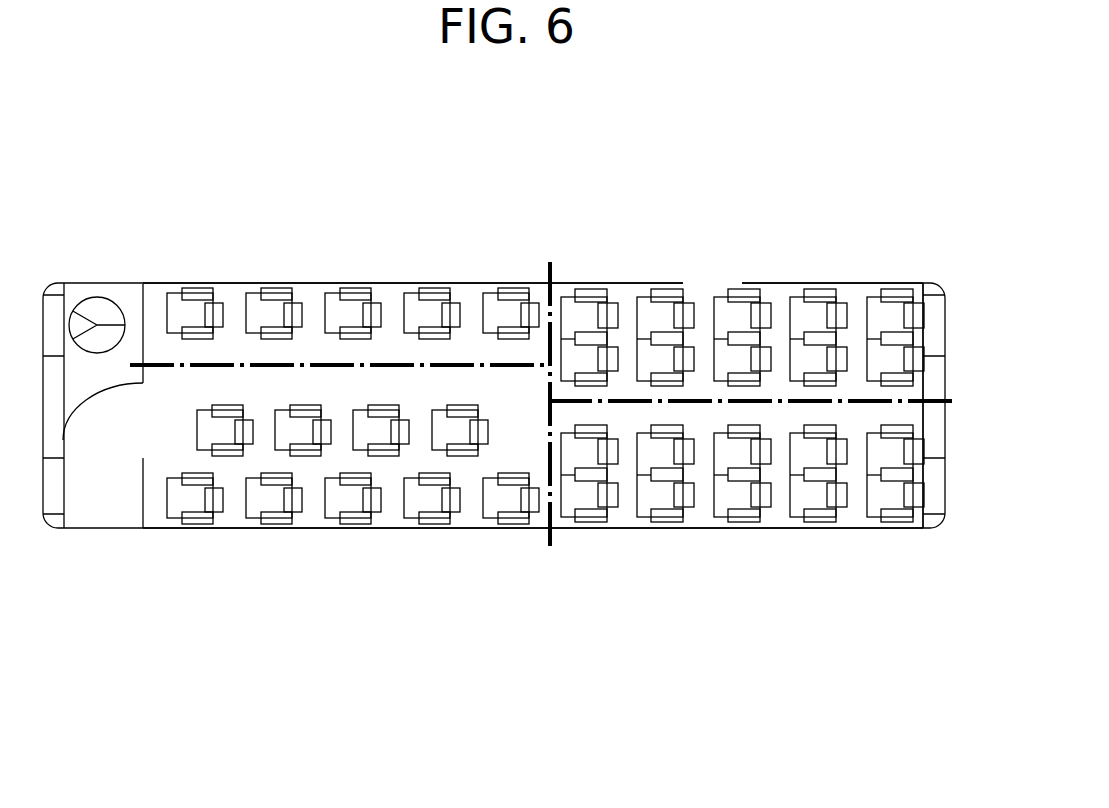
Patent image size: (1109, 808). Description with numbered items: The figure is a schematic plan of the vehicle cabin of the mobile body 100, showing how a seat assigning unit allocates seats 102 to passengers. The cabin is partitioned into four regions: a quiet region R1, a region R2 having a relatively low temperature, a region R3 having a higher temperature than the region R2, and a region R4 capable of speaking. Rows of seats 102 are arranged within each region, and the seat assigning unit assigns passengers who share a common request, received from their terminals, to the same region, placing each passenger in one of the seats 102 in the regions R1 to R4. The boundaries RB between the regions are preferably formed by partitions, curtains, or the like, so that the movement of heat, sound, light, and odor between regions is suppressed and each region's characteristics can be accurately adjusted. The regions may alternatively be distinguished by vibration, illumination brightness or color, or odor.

The mobile body 100 is at (925, 714).
The seat 102 is at (190, 308).
The quiet region R1 is at (306, 228).
The region having a relatively low temperature R2 is at (753, 232).
The region having a higher temperature than the region R2 R3 is at (362, 560).
The region capable of speaking R4 is at (763, 578).
The boundaries of the regions RB is at (383, 365).